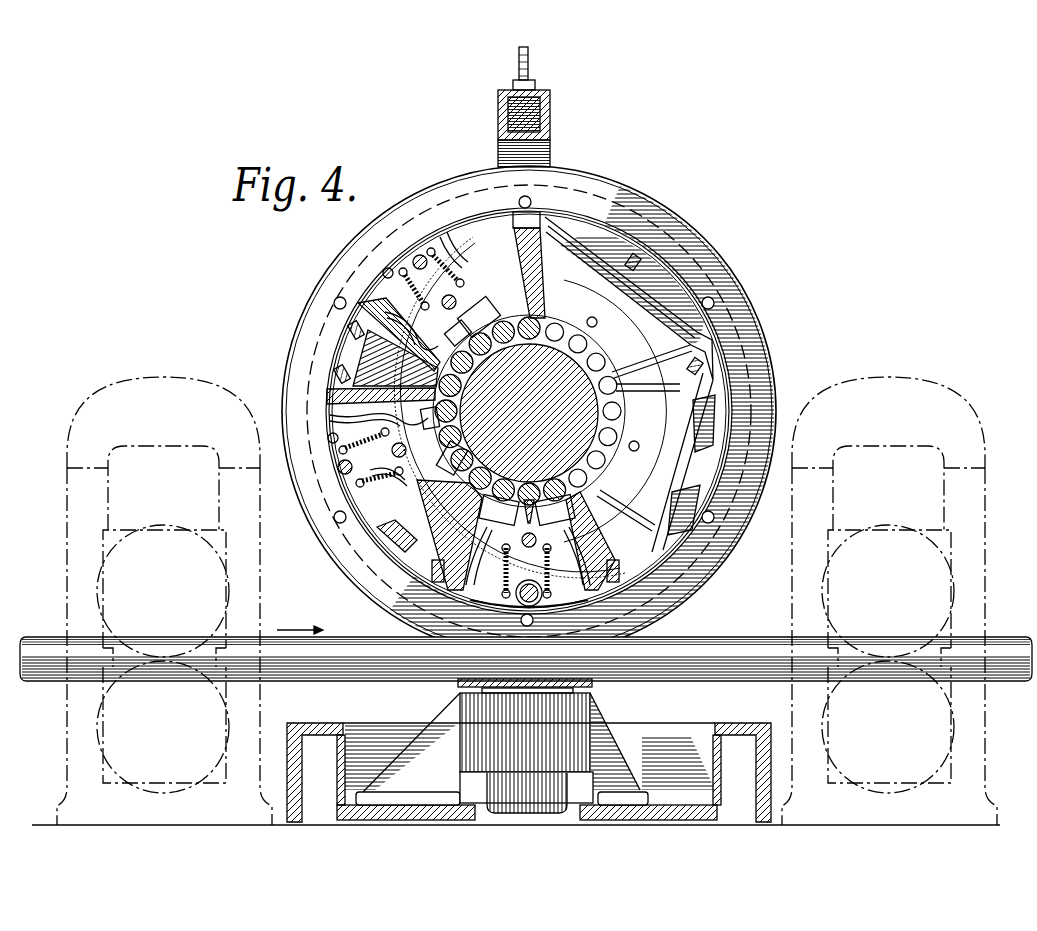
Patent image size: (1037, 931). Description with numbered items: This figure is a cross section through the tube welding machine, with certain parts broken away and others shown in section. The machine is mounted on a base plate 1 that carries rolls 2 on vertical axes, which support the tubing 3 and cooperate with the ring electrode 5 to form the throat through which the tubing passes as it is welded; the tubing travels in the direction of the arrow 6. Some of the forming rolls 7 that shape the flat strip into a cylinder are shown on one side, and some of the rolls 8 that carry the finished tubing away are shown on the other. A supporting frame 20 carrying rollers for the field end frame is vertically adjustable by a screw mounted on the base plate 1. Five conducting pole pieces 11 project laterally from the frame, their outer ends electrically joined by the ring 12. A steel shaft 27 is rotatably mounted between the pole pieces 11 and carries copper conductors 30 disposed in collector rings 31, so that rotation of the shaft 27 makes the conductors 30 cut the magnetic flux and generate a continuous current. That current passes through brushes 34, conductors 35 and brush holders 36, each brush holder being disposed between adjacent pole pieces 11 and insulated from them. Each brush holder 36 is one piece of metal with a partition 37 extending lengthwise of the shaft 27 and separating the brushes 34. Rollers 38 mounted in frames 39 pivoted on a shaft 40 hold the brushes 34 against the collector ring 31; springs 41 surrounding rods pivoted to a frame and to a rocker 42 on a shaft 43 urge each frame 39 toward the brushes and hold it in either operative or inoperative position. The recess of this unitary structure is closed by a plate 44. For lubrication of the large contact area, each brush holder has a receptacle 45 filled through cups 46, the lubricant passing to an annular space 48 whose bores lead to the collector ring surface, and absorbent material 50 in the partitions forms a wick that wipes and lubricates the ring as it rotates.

The base plate 1 is at (668, 812).
The rolls 2 is at (594, 683).
The tubing 3 is at (707, 645).
The ring electrode 5 is at (772, 387).
The arrow 6 is at (294, 629).
The forming rolls 7 is at (97, 712).
The rolls 8 is at (955, 705).
The pole pieces 11 is at (427, 560).
The ring 12 is at (585, 284).
The supporting frame 20 is at (550, 118).
The shaft 27 is at (586, 360).
The conductors 30 is at (470, 357).
The collector rings 31 is at (485, 473).
The brushes 34 is at (488, 410).
The conductors 35 is at (528, 553).
The brush holders 36 is at (455, 572).
The partition 37 is at (454, 335).
The rollers 38 is at (420, 320).
The frames 39 is at (444, 297).
The shaft 40 is at (529, 547).
The springs 41 is at (460, 278).
The rocker 42 is at (340, 462).
The shaft 43 is at (350, 480).
The plate 44 is at (330, 420).
The receptacle 45 is at (642, 282).
The cups 46 is at (638, 258).
The annular space 48 is at (422, 422).
The absorbent material 50 is at (501, 483).